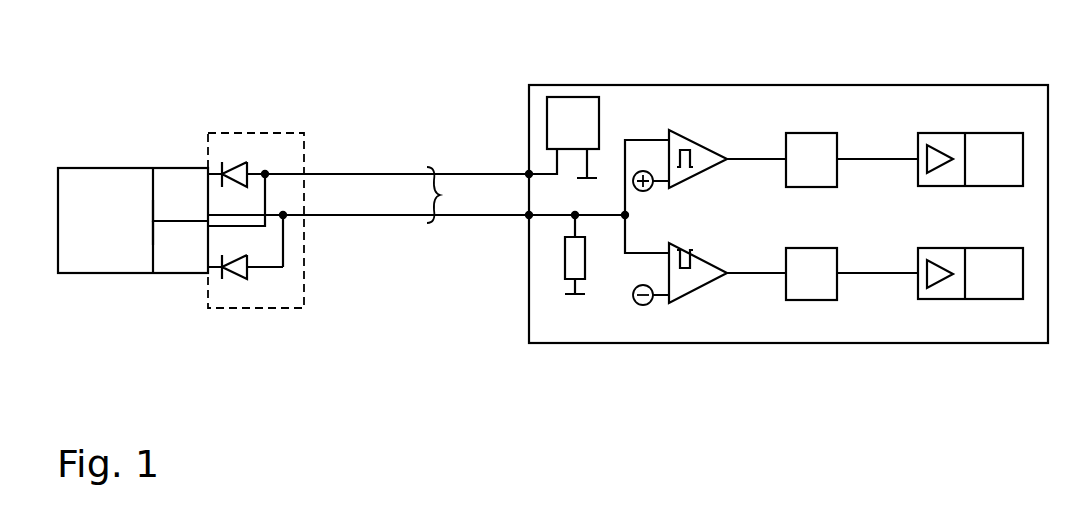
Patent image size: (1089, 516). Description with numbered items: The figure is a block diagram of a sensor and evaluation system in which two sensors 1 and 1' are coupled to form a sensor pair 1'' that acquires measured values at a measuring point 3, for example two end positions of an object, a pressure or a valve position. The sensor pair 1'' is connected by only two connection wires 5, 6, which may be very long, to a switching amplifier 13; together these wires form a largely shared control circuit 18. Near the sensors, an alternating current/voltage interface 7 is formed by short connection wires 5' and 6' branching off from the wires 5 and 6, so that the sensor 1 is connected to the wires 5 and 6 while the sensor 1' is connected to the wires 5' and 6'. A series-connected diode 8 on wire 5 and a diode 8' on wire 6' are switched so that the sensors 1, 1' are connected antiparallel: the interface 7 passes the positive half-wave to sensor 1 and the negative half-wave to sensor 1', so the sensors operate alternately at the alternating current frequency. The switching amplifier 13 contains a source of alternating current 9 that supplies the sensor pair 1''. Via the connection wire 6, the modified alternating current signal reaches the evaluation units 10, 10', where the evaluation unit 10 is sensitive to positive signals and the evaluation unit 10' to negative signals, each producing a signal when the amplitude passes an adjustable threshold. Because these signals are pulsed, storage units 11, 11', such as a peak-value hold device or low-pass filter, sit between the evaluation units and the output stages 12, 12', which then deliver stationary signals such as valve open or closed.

The sensor 1 is at (180, 194).
The sensor 1' is at (175, 247).
The sensor pair 1'' is at (122, 280).
The measuring point 3 is at (133, 220).
The connection wire 5 is at (397, 137).
The short connection wire 5' is at (270, 152).
The connection wire 6 is at (416, 252).
The short connection wire 6' is at (316, 265).
The alternating current/voltage interface 7 is at (260, 314).
The diode 8 is at (236, 131).
The diode 8' is at (244, 314).
The source of alternating current 9 is at (567, 97).
The evaluation unit 10 is at (705, 122).
The evaluation unit 10' is at (705, 306).
The storage unit 11 is at (852, 160).
The storage unit 11' is at (852, 274).
The output stage 12 is at (970, 111).
The output stage 12' is at (970, 321).
The switching amplifier 13 is at (522, 326).
The control circuit 18 is at (448, 198).